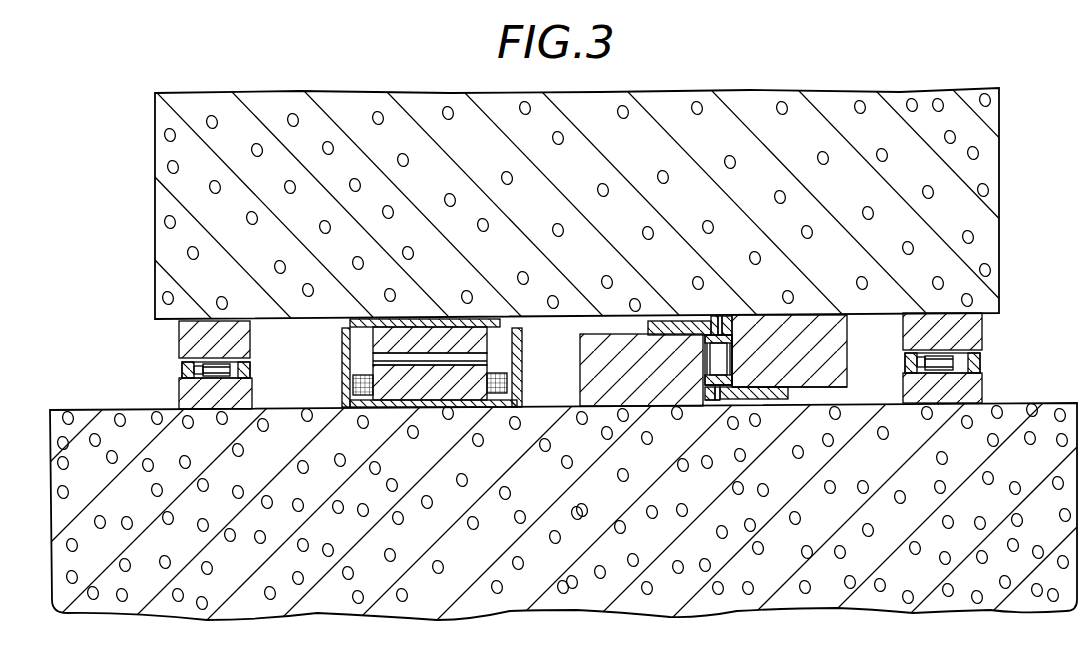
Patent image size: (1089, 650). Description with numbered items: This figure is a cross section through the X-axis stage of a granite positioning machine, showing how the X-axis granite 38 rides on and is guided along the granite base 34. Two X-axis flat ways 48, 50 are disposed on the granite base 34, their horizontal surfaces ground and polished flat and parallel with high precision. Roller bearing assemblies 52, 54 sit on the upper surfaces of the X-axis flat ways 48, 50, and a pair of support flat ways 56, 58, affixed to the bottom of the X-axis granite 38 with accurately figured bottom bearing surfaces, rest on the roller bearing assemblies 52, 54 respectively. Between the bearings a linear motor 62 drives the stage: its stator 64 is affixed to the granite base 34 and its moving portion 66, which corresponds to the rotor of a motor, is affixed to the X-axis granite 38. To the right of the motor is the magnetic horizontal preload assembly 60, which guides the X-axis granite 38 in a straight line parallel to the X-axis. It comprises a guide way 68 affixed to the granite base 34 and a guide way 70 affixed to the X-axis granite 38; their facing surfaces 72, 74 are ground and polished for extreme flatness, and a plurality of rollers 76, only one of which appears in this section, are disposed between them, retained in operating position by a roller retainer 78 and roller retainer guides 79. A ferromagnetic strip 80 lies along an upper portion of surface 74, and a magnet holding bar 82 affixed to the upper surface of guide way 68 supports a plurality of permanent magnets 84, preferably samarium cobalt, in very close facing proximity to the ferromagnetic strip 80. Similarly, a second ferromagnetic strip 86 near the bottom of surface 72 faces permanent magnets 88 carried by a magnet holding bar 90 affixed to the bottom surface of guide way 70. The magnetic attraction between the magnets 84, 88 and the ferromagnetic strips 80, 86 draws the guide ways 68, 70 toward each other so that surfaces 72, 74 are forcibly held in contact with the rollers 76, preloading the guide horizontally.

The granite base 34 is at (1074, 406).
The X-axis granite 38 is at (991, 271).
The X-axis flat way 48 is at (180, 392).
The X-axis flat way 50 is at (983, 387).
The roller bearing assembly 52 is at (176, 367).
The roller bearing assembly 54 is at (999, 362).
The support flat way 56 is at (180, 337).
The support flat way 58 is at (983, 333).
The magnetic horizontal preload assembly 60 is at (812, 419).
The linear motor 62 is at (431, 418).
The stator 64 is at (383, 408).
The moving portion 66 is at (400, 328).
The guide way 68 is at (603, 407).
The guide way 70 is at (810, 330).
The surface 72 is at (704, 382).
The surface 74 is at (733, 372).
The roller 76 is at (707, 357).
The roller retainer 78 is at (740, 335).
The roller retainer guide 79 is at (724, 317).
The ferromagnetic strip 80 is at (737, 384).
The magnet holding bar 82 is at (660, 325).
The permanent magnet 84 is at (713, 318).
The ferromagnetic strip 86 is at (707, 404).
The permanent magnet 88 is at (720, 403).
The magnet holding bar 90 is at (784, 402).